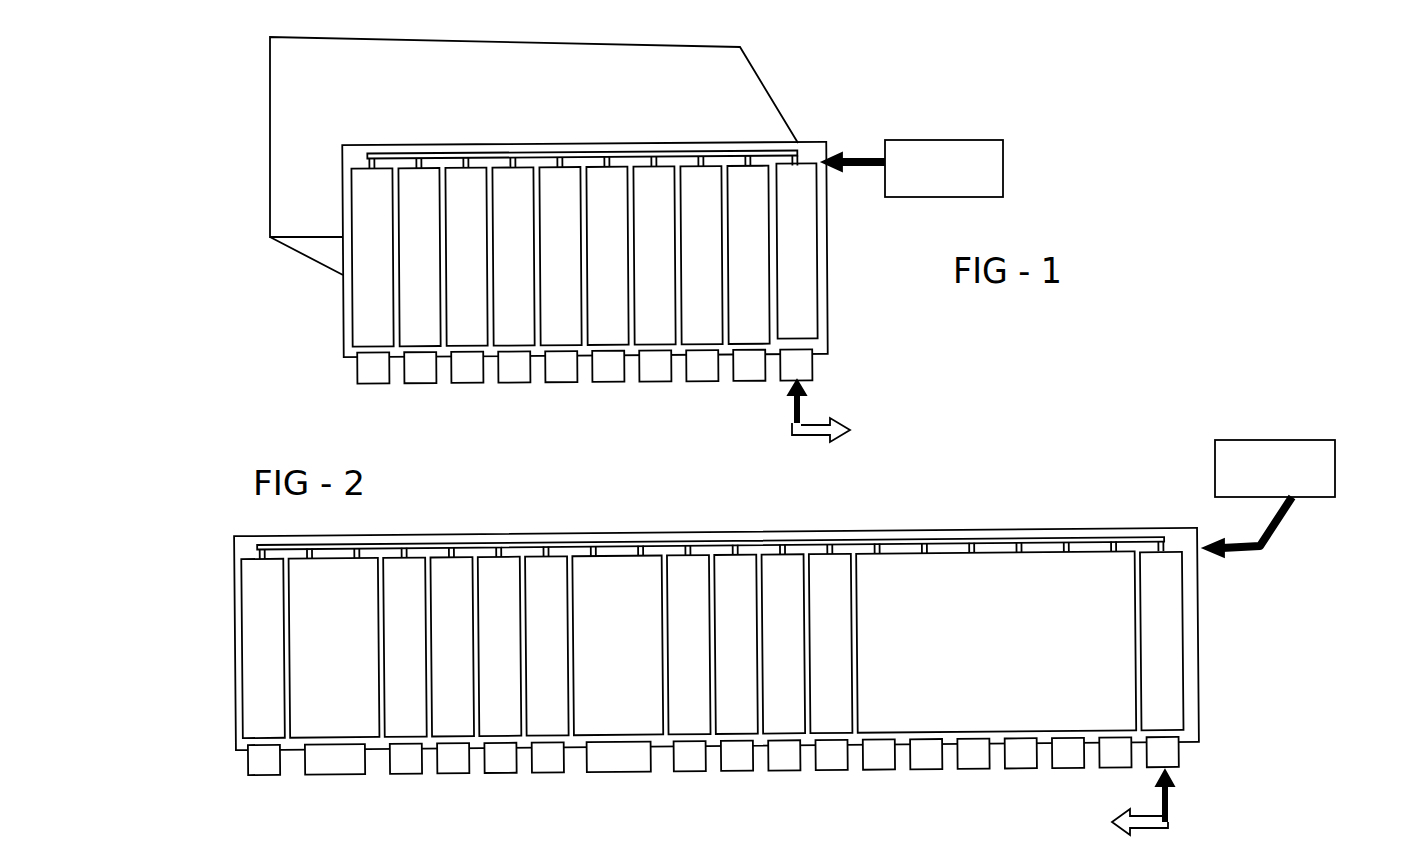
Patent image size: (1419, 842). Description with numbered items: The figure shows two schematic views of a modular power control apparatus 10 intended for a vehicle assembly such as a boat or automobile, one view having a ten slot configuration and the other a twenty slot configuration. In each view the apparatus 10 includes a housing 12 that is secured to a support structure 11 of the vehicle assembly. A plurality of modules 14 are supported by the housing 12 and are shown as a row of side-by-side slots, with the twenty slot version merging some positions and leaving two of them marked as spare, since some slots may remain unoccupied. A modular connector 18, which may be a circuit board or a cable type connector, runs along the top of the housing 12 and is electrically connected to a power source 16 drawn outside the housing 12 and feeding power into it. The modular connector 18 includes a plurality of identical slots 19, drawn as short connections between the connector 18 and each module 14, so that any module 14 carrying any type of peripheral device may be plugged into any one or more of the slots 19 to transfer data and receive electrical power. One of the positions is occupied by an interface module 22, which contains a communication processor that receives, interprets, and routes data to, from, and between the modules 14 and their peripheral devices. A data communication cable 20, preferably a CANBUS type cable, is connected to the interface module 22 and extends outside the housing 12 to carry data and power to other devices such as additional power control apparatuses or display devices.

In FIG. 1, the modular power control apparatus 10 is at (396, 99).
In FIG. 2, the modular power control apparatus 10 is at (1027, 500).
In FIG. 1, the support structure 11 is at (588, 60).
In FIG. 1, the housing 12 is at (813, 147).
In FIG. 2, the housing 12 is at (697, 537).
In FIG. 1, the modules 14 is at (660, 183).
In FIG. 2, the modules 14 is at (575, 583).
In FIG. 1, the power source 16 is at (1003, 156).
In FIG. 2, the power source 16 is at (1322, 442).
In FIG. 1, the modular connector 18 is at (490, 153).
In FIG. 2, the modular connector 18 is at (618, 542).
In FIG. 1, the slots 19 is at (460, 160).
In FIG. 2, the slots 19 is at (350, 546).
In FIG. 1, the data communication cable 20 is at (800, 415).
In FIG. 2, the data communication cable 20 is at (1182, 808).
In FIG. 1, the interface module 22 is at (800, 270).
In FIG. 2, the interface module 22 is at (1178, 664).